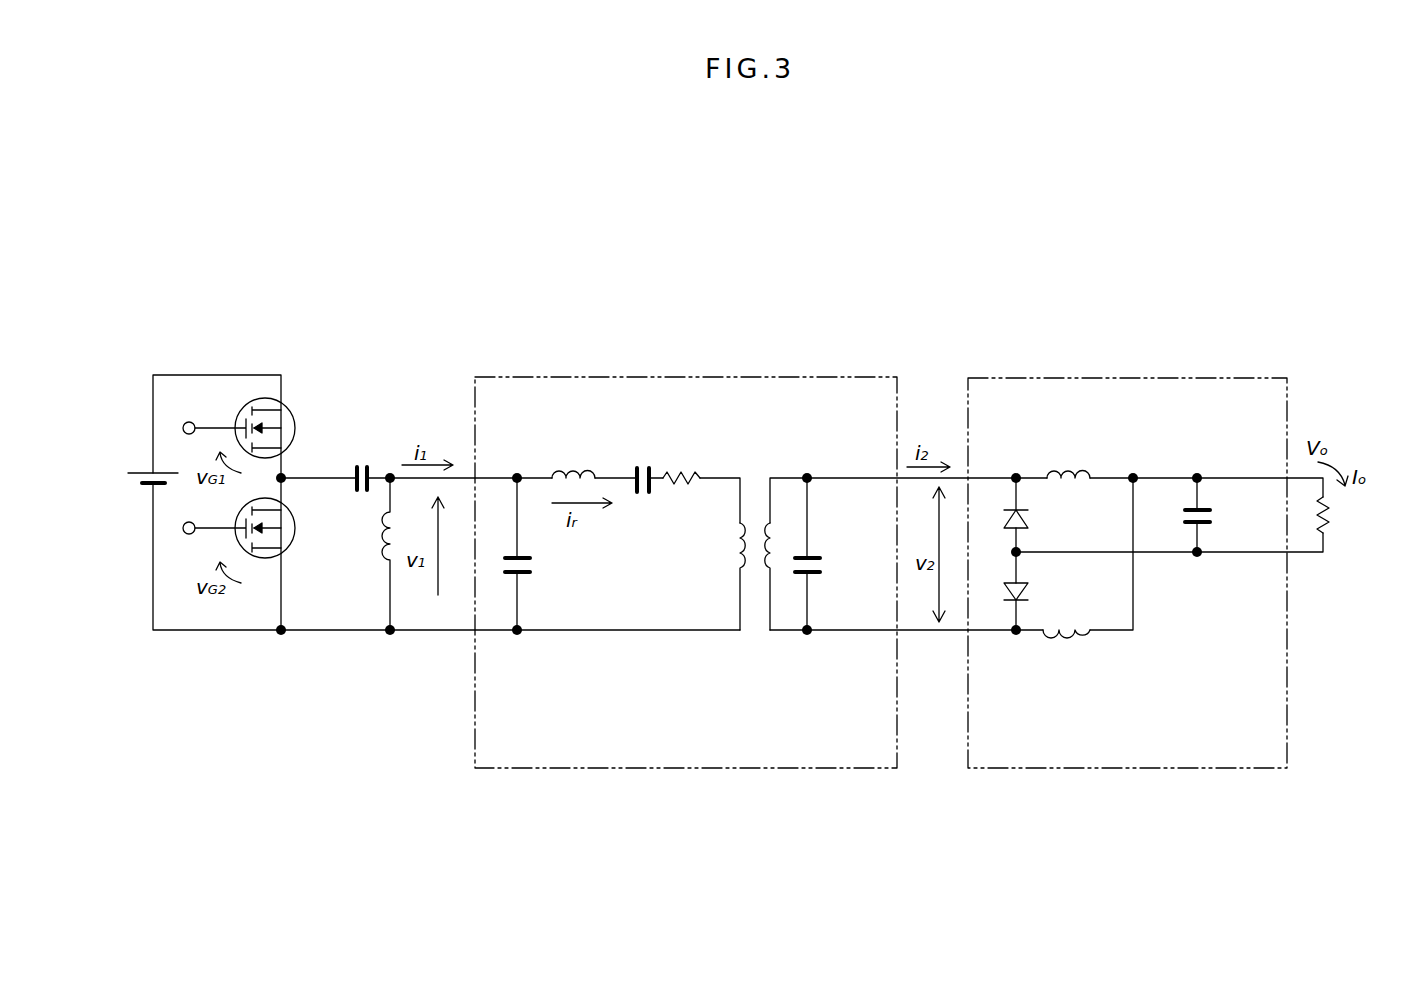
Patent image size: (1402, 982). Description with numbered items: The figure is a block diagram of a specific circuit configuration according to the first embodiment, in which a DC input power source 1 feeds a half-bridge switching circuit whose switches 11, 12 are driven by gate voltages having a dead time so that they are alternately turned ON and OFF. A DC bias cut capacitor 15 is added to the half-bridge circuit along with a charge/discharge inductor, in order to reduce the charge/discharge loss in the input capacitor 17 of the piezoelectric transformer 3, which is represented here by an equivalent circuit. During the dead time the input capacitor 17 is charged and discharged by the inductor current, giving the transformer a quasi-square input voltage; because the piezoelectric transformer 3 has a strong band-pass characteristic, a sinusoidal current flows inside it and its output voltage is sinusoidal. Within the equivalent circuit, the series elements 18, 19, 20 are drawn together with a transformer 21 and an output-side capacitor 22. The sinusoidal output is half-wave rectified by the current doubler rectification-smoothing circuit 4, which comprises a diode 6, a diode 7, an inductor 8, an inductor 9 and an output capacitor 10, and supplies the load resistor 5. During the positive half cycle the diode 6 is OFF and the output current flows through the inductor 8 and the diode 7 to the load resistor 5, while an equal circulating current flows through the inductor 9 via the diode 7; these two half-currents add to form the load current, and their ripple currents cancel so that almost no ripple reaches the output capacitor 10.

The DC input power source 1 is at (128, 475).
The piezoelectric transformer 3 is at (741, 377).
The current doubler rectification-smoothing circuit 4 is at (1182, 378).
The load resistor 5 is at (1335, 521).
The diode 6 is at (1030, 519).
The diode 7 is at (1030, 590).
The inductor 8 is at (1063, 471).
The inductor 9 is at (1061, 640).
The output capacitor 10 is at (1213, 519).
The switch 11 is at (286, 413).
The switch 12 is at (295, 529).
The DC bias cut capacitor 15 is at (361, 466).
The input capacitor 17 is at (535, 565).
The inductor 18 is at (571, 468).
The capacitor 19 is at (647, 467).
The resistor 20 is at (693, 475).
The transformer 21 is at (755, 600).
The capacitor 22 is at (821, 565).